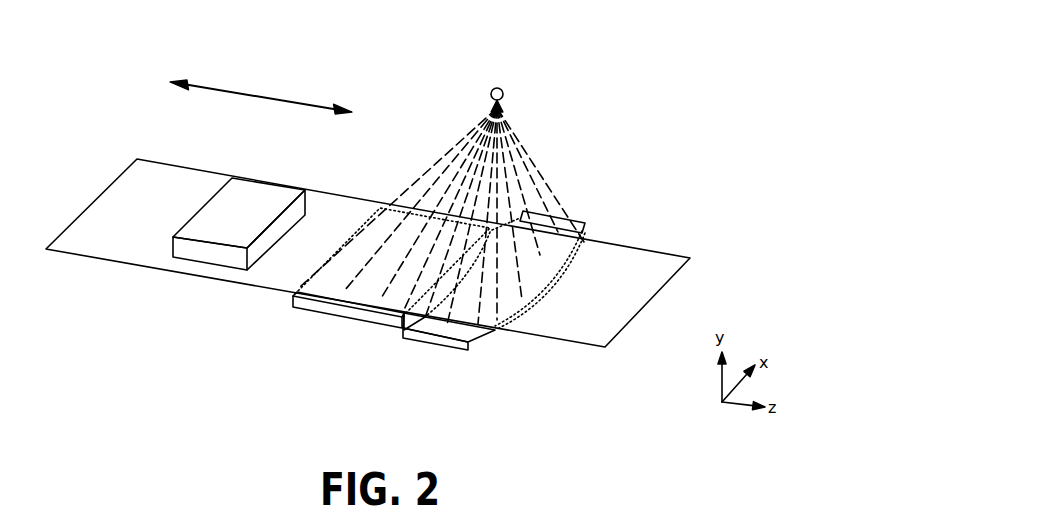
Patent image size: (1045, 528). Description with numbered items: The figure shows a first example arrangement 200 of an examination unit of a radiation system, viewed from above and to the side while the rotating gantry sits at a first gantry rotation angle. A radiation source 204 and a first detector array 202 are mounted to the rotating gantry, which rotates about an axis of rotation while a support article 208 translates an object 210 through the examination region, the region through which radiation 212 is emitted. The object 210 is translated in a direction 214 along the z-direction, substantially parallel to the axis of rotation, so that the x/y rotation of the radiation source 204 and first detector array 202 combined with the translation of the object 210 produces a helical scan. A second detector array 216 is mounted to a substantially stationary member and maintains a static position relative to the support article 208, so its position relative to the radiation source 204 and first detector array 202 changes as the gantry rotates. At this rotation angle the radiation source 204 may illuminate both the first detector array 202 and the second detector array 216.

The first example arrangement 200 is at (665, 31).
The first detector array 202 is at (567, 225).
The radiation source 204 is at (503, 88).
The support article 208 is at (635, 277).
The object 210 is at (207, 251).
The radiation 212 is at (522, 150).
The direction 214 is at (257, 95).
The second detector array 216 is at (360, 312).